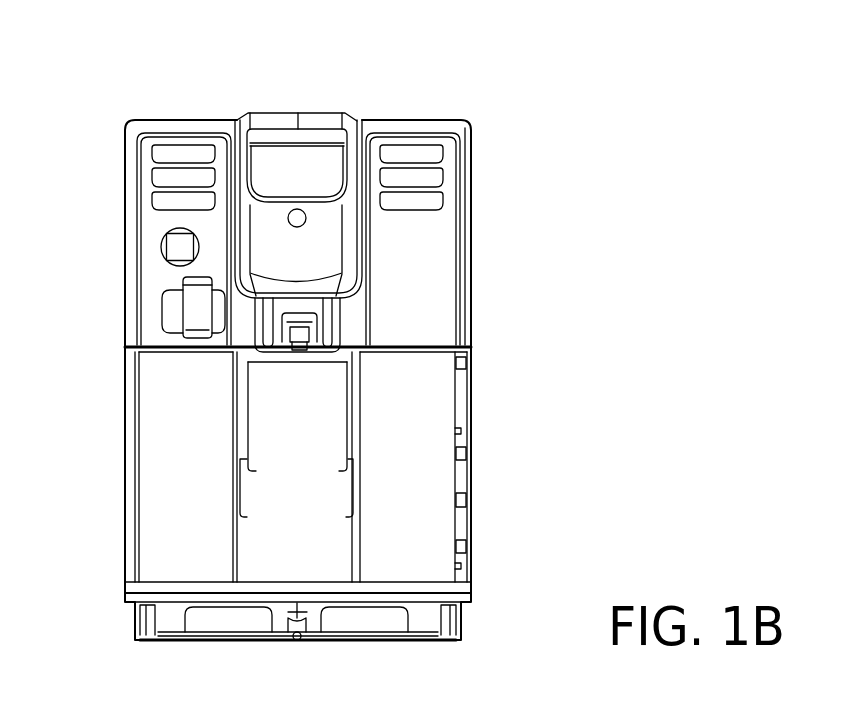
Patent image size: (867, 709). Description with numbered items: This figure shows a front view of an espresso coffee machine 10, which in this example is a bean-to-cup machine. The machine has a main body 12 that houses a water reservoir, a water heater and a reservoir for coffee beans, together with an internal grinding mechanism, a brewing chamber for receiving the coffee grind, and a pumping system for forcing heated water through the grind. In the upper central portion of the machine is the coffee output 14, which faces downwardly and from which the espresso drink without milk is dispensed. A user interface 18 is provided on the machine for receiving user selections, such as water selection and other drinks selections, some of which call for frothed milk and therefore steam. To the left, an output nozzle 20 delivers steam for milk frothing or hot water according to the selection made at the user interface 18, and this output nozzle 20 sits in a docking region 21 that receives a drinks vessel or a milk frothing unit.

The espresso coffee machine 10 is at (560, 118).
The main body 12 is at (124, 221).
The coffee output 14 is at (327, 360).
The user interface 18 is at (473, 235).
The output nozzle 20 is at (172, 309).
The docking region 21 is at (199, 504).